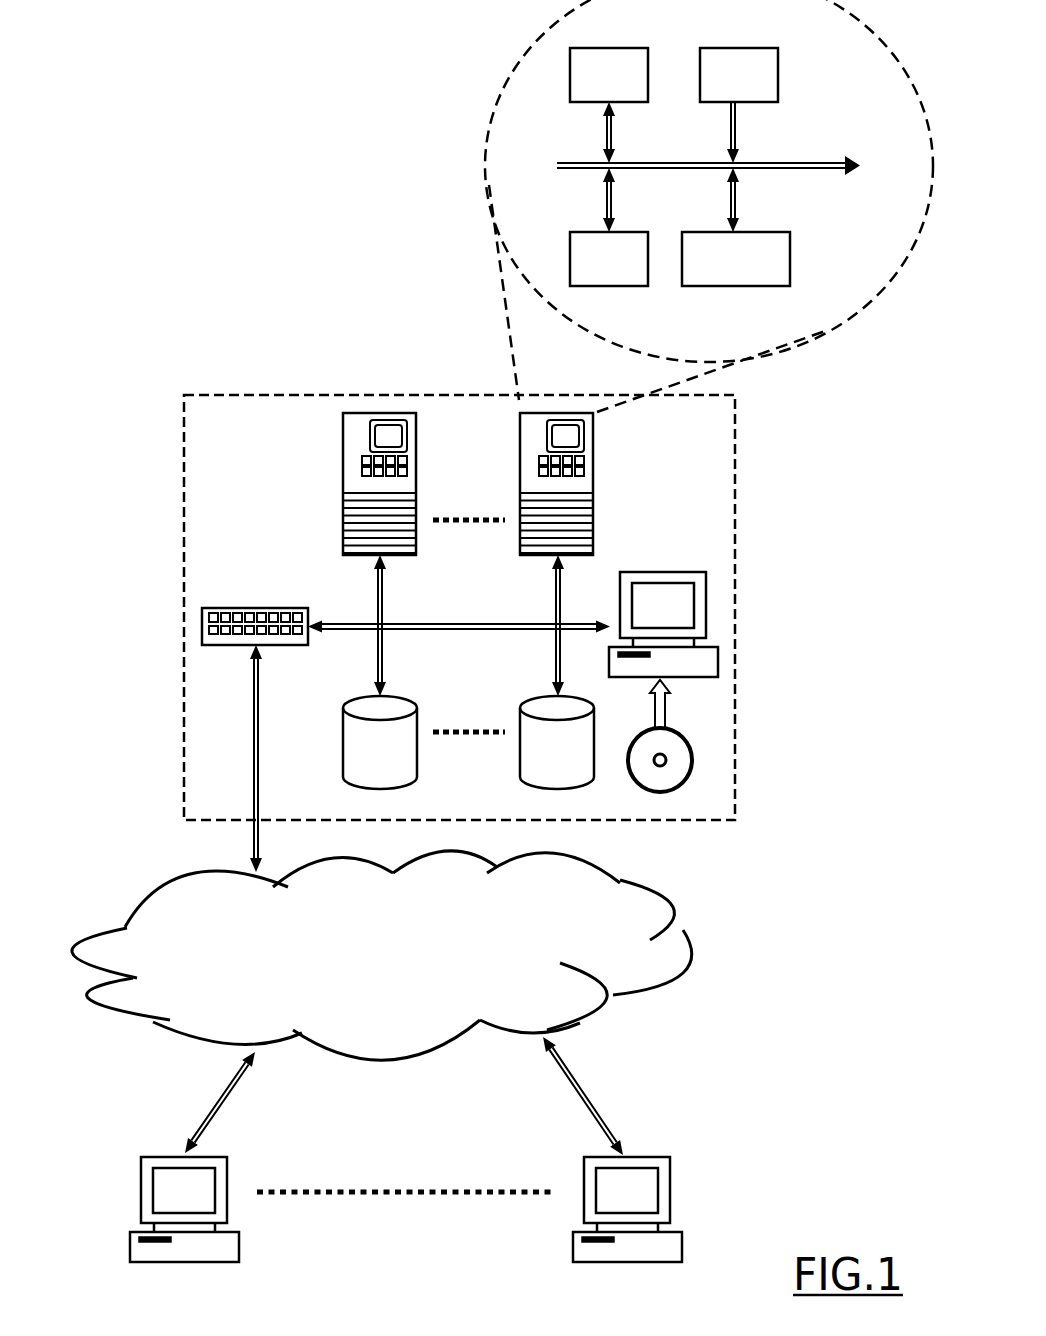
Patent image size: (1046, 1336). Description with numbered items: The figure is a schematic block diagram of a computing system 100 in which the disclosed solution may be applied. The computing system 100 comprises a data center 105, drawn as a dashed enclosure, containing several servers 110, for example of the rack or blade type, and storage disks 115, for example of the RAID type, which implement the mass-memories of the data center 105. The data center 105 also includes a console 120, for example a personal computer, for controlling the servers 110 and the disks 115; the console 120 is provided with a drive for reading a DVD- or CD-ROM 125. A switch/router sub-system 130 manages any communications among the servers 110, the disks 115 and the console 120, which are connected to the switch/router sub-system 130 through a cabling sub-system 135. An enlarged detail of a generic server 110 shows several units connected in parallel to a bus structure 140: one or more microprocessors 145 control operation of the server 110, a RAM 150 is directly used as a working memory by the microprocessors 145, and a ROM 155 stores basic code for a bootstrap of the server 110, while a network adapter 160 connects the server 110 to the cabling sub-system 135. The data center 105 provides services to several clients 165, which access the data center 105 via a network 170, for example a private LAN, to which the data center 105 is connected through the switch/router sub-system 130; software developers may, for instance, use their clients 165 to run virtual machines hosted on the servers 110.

The computing system 100 is at (227, 179).
The data center 105 is at (506, 607).
The server 110 is at (424, 484).
The storage disk 115 is at (468, 741).
The console 120 is at (664, 600).
The DVD- or CD-ROM 125 is at (623, 748).
The switch/router sub-system 130 is at (255, 602).
The cabling sub-system 135 is at (459, 604).
The bus structure 140 is at (732, 167).
The microprocessor 145 is at (635, 56).
The RAM 150 is at (621, 285).
The ROM 155 is at (764, 56).
The network adapter 160 is at (749, 285).
The client computing machine 165 is at (452, 1193).
The network 170 is at (422, 955).